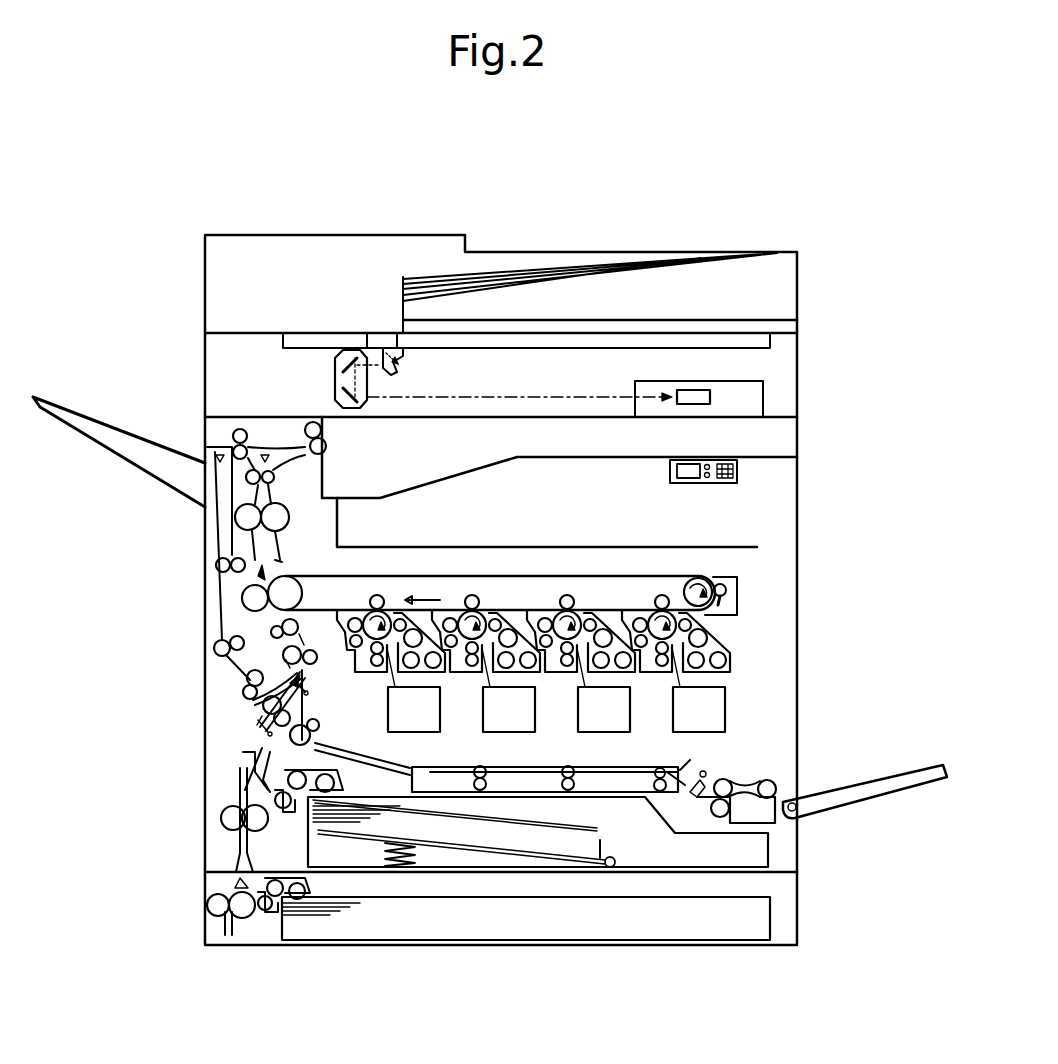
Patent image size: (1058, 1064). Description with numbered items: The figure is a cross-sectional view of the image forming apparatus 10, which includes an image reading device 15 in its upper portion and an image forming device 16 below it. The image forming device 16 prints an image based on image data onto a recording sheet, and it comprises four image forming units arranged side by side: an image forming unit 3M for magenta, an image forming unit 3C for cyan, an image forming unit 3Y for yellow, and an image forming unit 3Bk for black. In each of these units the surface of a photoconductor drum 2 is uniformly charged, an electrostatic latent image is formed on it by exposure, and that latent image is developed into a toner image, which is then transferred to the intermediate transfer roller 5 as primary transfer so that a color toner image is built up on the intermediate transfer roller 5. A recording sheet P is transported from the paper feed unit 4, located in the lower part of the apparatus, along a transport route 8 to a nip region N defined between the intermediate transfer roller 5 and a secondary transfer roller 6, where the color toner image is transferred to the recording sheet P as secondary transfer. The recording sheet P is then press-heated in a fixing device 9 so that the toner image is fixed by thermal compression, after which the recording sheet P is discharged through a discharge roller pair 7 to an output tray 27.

The image forming apparatus 10 is at (513, 176).
The image reading device 15 is at (800, 311).
The output tray 27 is at (413, 487).
The discharge roller pair 7 is at (313, 430).
The fixing device 9 is at (250, 517).
The nip region N is at (232, 563).
The secondary transfer roller 6 is at (245, 600).
The transport route 8 is at (258, 735).
The intermediate transfer roller 5 is at (676, 580).
The image forming device 16 is at (753, 658).
The image forming unit for magenta 3M is at (376, 595).
The image forming unit for cyan 3C is at (465, 595).
The image forming unit for yellow 3Y is at (545, 595).
The image forming unit for black 3Bk is at (649, 595).
The photoconductor drum 2 is at (466, 610).
The recording sheet P is at (585, 822).
The paper feed unit 4 is at (758, 955).